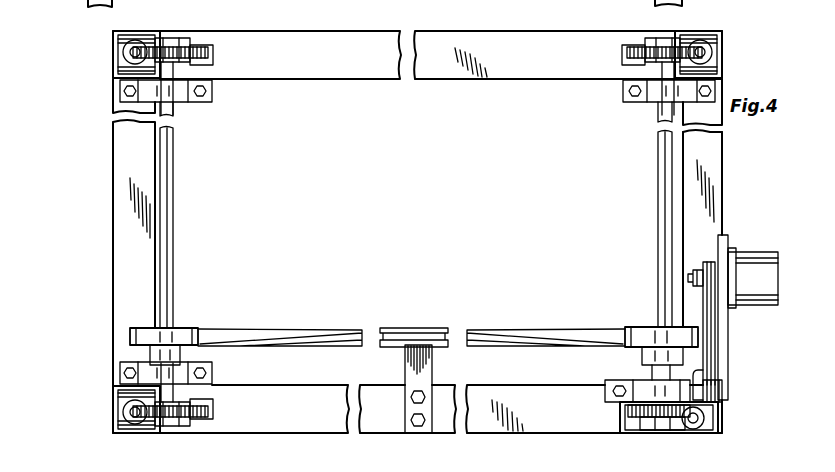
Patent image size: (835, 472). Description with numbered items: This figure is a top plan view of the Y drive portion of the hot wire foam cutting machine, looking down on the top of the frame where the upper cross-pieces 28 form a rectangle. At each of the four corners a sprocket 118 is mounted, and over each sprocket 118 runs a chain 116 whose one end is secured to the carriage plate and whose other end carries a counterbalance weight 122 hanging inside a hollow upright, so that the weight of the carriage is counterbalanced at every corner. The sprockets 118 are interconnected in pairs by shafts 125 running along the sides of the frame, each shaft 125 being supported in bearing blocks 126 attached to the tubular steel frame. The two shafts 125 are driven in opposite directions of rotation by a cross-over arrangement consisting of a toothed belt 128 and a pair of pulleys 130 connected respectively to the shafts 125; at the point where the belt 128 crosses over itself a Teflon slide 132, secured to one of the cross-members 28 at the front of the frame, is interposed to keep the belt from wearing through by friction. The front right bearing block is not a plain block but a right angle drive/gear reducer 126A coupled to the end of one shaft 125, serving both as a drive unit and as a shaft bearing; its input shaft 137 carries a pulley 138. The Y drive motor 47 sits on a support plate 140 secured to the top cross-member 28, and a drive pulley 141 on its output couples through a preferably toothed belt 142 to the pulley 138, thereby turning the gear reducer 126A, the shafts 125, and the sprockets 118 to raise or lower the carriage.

The cross-pieces 28 is at (370, 82).
The Y drive motor 47 is at (750, 304).
The chain 116 is at (130, 52).
The sprocket 118 is at (176, 38).
The counterbalance weight 122 is at (120, 45).
The sprocket shaft 125 is at (174, 186).
The bearing block 126 is at (185, 98).
The right angle drive/gear reducer 126A is at (640, 388).
The toothed belt 128 is at (300, 330).
The pulley 130 is at (185, 328).
The Teflon slide 132 is at (432, 378).
The input shaft 137 is at (702, 368).
The pulley 138 is at (722, 390).
The support plate 140 is at (726, 240).
The drive pulley 141 is at (693, 274).
The belt 142 is at (716, 350).